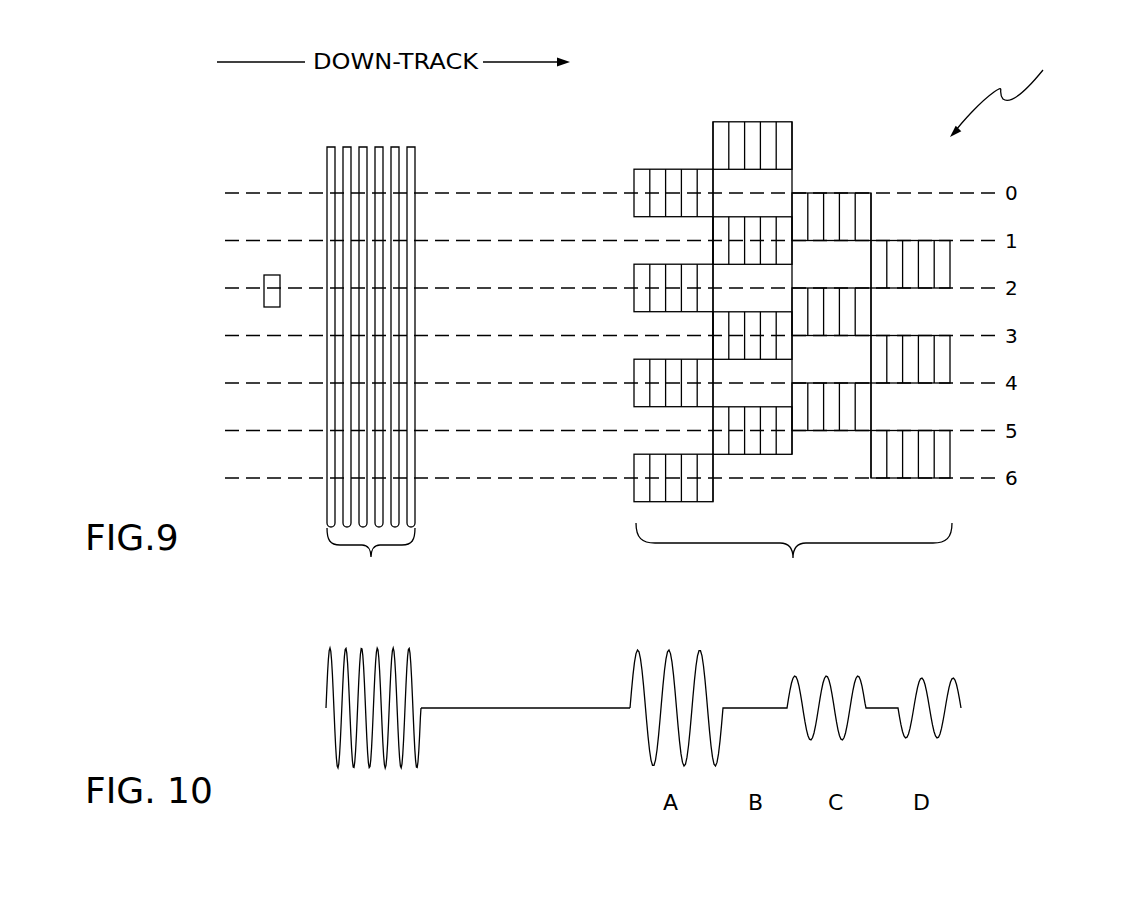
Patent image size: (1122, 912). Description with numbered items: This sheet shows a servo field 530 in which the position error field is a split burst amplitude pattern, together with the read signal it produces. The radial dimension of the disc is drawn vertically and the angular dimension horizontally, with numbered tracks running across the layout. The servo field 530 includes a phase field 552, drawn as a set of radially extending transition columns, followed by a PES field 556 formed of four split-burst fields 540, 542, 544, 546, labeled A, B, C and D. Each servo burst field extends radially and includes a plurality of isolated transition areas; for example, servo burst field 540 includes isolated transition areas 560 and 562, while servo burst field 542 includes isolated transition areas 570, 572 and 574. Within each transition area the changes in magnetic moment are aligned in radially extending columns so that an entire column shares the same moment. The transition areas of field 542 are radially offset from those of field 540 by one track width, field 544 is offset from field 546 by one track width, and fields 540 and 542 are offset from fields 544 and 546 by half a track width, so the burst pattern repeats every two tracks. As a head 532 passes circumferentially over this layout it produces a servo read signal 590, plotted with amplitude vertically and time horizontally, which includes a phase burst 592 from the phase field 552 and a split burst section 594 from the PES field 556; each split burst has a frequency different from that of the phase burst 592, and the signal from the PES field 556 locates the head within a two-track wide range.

In FIG. 9, the servo field 530 is at (1023, 95).
In FIG. 9, the head 532 is at (264, 278).
In FIG. 9, the split-burst field A 540 is at (618, 260).
In FIG. 9, the split-burst field B 542 is at (805, 236).
In FIG. 9, the split-burst field C 544 is at (825, 73).
In FIG. 9, the split-burst field D 546 is at (908, 73).
In FIG. 9, the phase field 552 is at (371, 367).
In FIG. 9, the PES field 556 is at (739, 305).
In FIG. 9, the isolated transition area 560 is at (652, 168).
In FIG. 9, the isolated transition area 562 is at (634, 297).
In FIG. 9, the isolated transition area 570 is at (793, 138).
In FIG. 9, the isolated transition area 572 is at (712, 233).
In FIG. 9, the isolated transition area 574 is at (712, 350).
In FIG. 10, the servo read signal 590 is at (646, 673).
In FIG. 10, the phase burst 592 is at (305, 680).
In FIG. 10, the split burst section 594 is at (622, 678).